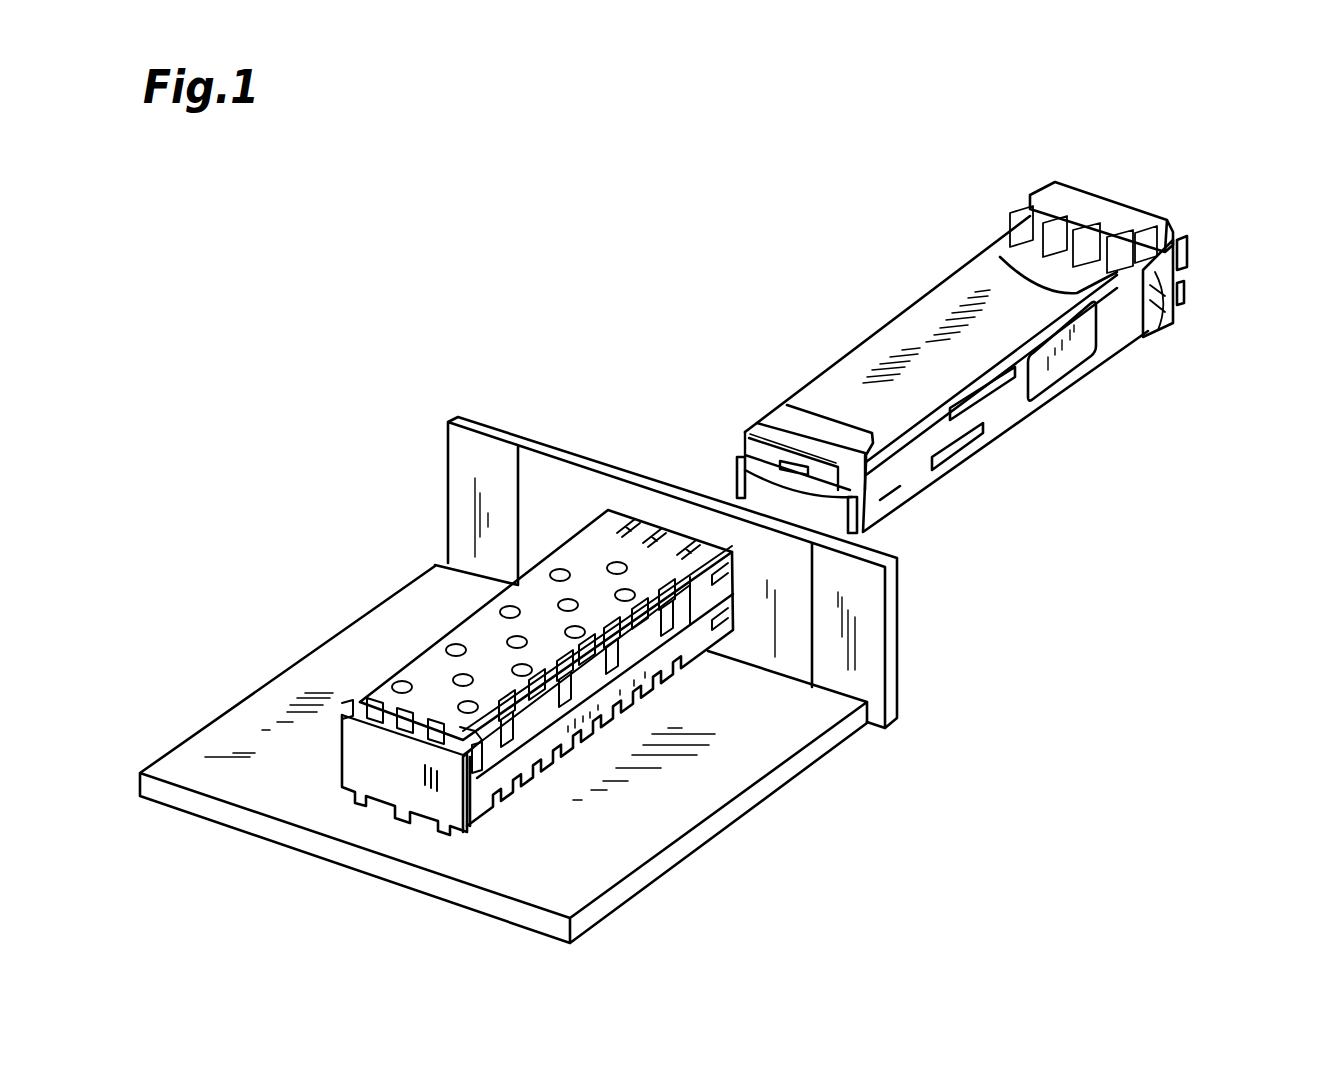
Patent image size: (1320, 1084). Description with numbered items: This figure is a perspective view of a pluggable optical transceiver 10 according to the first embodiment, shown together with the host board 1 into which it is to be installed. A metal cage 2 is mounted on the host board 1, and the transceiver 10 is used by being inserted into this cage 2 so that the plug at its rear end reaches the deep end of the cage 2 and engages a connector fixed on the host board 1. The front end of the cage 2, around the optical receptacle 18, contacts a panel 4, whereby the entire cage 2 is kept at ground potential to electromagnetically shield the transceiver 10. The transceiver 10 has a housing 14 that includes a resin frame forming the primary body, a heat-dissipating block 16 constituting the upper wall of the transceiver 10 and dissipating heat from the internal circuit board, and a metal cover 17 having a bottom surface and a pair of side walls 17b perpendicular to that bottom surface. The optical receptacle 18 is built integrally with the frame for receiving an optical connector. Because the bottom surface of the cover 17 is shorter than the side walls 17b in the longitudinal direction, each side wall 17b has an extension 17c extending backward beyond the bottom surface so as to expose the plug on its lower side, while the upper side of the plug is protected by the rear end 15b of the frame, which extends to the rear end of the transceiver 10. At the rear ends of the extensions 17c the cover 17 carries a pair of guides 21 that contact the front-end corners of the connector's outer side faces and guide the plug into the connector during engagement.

The host board 1 is at (646, 826).
The metal cage 2 is at (478, 635).
The panel 4 is at (578, 465).
The optical transceiver 10 is at (947, 311).
The housing 14 is at (947, 357).
The rear end of the frame 15b is at (812, 422).
The heat-dissipating block 16 is at (901, 350).
The cover 17 is at (1008, 408).
The side walls 17b is at (1063, 364).
The extension 17c is at (897, 487).
The optical receptacle 18 is at (1187, 247).
The guides 21 is at (775, 497).